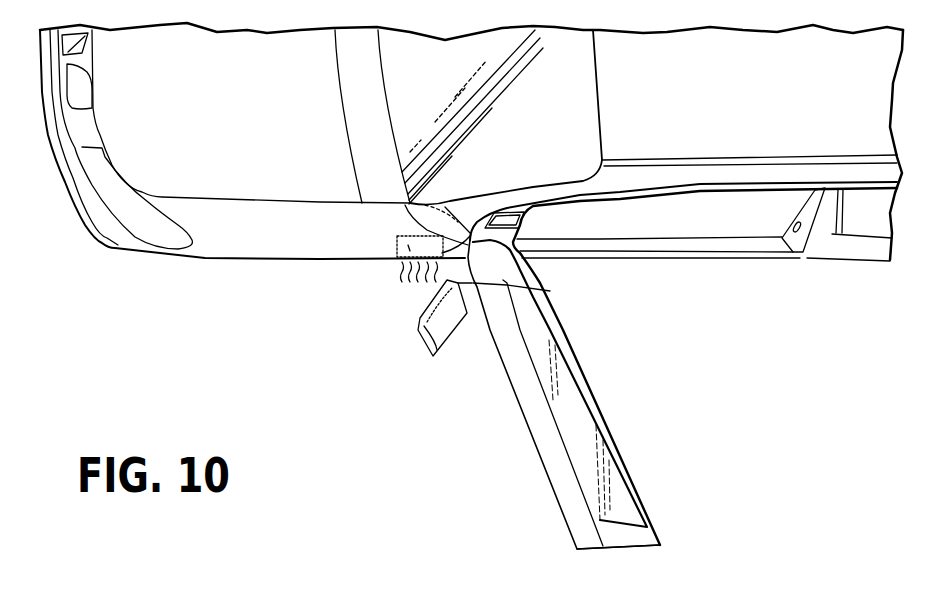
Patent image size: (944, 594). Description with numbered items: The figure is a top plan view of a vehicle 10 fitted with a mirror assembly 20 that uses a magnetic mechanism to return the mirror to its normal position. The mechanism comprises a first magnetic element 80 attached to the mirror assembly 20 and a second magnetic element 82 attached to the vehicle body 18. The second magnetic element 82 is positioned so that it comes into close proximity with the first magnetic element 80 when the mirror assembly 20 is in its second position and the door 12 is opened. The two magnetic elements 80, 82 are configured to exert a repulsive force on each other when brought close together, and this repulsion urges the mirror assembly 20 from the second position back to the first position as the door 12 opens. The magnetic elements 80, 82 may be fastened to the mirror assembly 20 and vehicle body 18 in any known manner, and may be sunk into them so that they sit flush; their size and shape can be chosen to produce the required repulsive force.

The vehicle 10 is at (100, 293).
The door 12 is at (555, 467).
The vehicle body 18 is at (413, 208).
The mirror assembly 20 is at (413, 397).
The first magnetic element 80 is at (418, 300).
The second magnetic element 82 is at (395, 262).